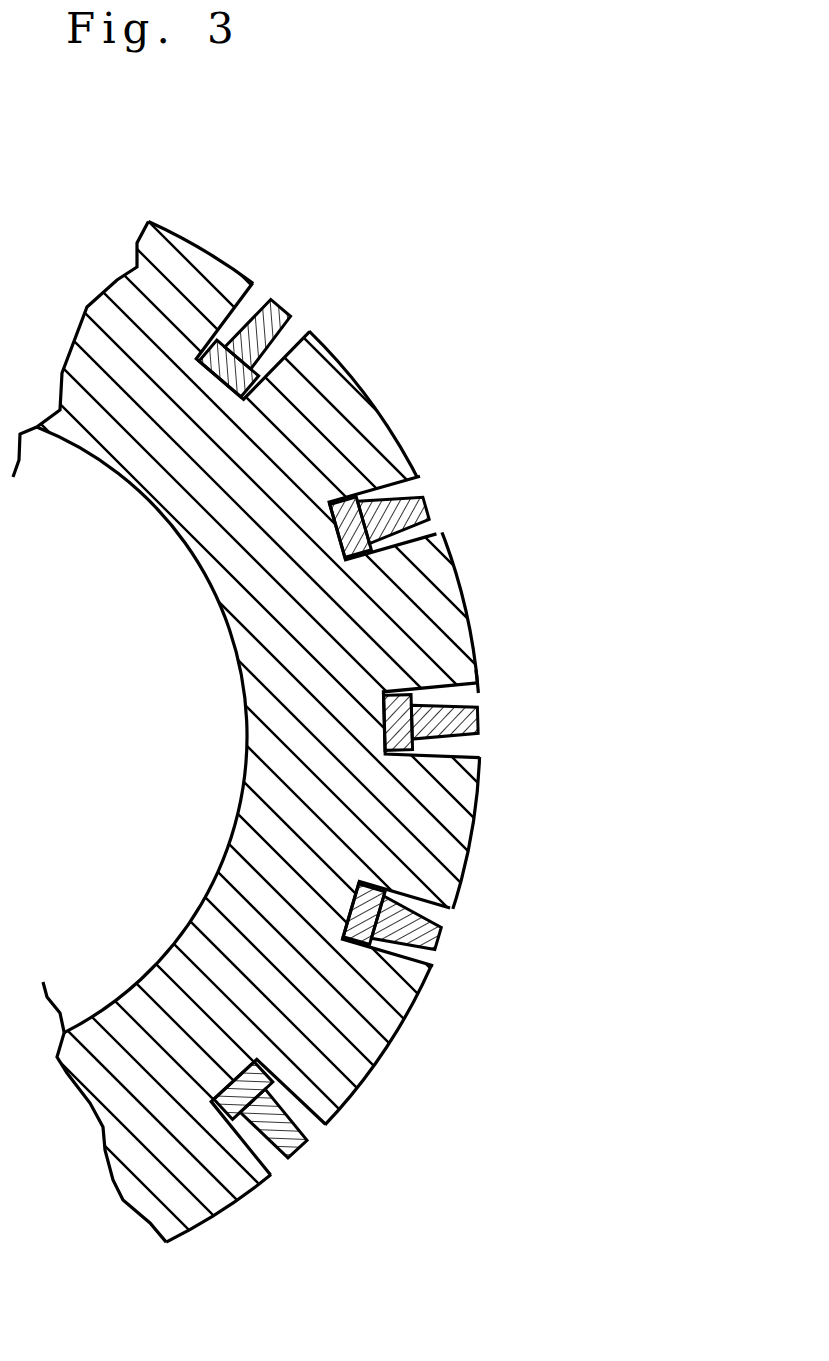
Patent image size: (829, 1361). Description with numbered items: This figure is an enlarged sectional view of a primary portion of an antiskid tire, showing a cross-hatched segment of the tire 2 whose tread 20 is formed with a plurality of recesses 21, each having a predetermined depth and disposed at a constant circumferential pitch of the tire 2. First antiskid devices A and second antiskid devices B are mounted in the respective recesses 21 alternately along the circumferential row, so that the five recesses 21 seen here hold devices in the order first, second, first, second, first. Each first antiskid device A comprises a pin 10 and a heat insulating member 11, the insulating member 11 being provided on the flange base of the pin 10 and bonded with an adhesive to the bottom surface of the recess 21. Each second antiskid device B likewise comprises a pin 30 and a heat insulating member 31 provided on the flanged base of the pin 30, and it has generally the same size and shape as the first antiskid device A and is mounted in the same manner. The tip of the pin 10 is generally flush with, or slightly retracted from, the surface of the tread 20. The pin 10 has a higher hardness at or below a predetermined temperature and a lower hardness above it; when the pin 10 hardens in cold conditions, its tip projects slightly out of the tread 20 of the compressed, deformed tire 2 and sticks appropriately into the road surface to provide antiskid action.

The tire 2 is at (414, 730).
The pin 10 is at (477, 683).
The heat insulating member 11 is at (400, 690).
The tread 20 is at (478, 822).
The recess 21 is at (290, 337).
The pin 30 is at (433, 932).
The heat insulating member 31 is at (353, 893).
The first antiskid device A is at (284, 304).
The second antiskid device B is at (425, 491).